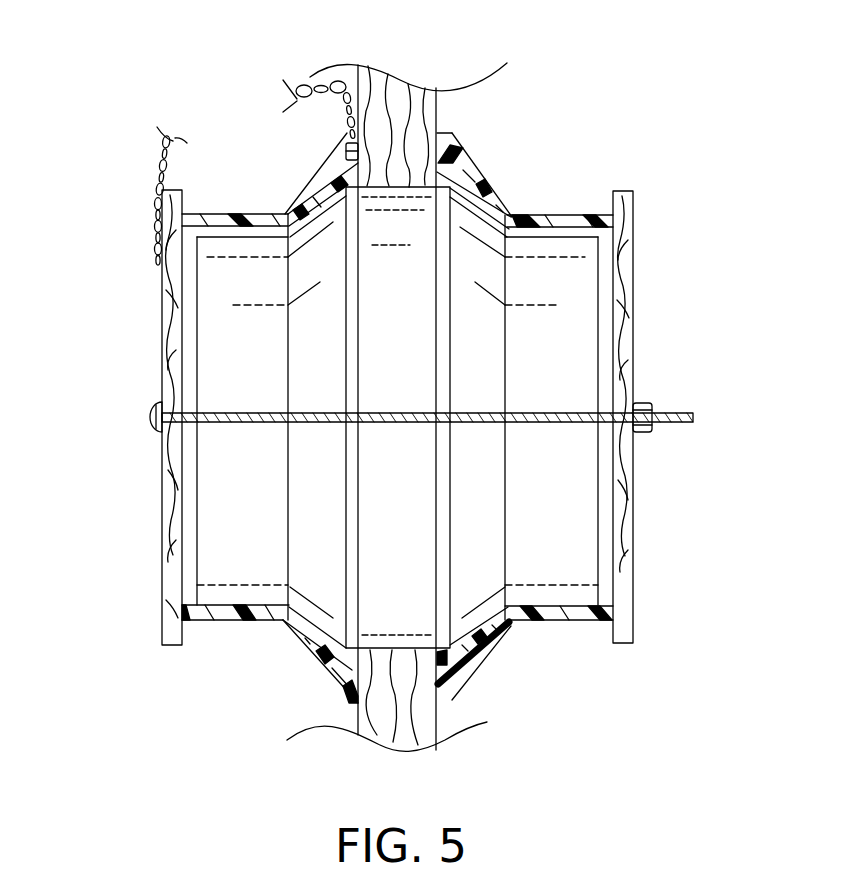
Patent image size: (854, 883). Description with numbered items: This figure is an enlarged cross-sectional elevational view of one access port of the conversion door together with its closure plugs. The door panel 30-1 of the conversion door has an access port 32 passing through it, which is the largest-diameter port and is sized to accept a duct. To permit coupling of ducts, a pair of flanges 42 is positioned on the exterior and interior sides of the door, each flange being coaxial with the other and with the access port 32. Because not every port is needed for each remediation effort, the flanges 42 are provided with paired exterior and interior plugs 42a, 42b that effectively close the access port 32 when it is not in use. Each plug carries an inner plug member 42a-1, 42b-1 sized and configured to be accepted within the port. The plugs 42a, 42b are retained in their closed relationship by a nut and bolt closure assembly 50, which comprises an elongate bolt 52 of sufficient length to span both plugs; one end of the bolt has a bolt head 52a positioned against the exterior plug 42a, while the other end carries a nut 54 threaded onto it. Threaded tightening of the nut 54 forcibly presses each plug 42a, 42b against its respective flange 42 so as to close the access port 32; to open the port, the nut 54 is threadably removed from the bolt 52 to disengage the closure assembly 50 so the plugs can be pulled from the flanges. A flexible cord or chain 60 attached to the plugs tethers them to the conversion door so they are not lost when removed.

The door panel 30-1 is at (385, 87).
The access port 32 is at (416, 294).
The flange 42 is at (267, 618).
The exterior plug 42a is at (170, 602).
The interior plug 42b is at (623, 234).
The inner plug member 42a-1 is at (188, 548).
The inner plug member 42b-1 is at (607, 475).
The nut and bolt closure assembly 50 is at (383, 421).
The elongate bolt 52 is at (233, 410).
The bolt head 52a is at (148, 410).
The nut 54 is at (643, 402).
The flexible cord or chain 60 is at (150, 170).